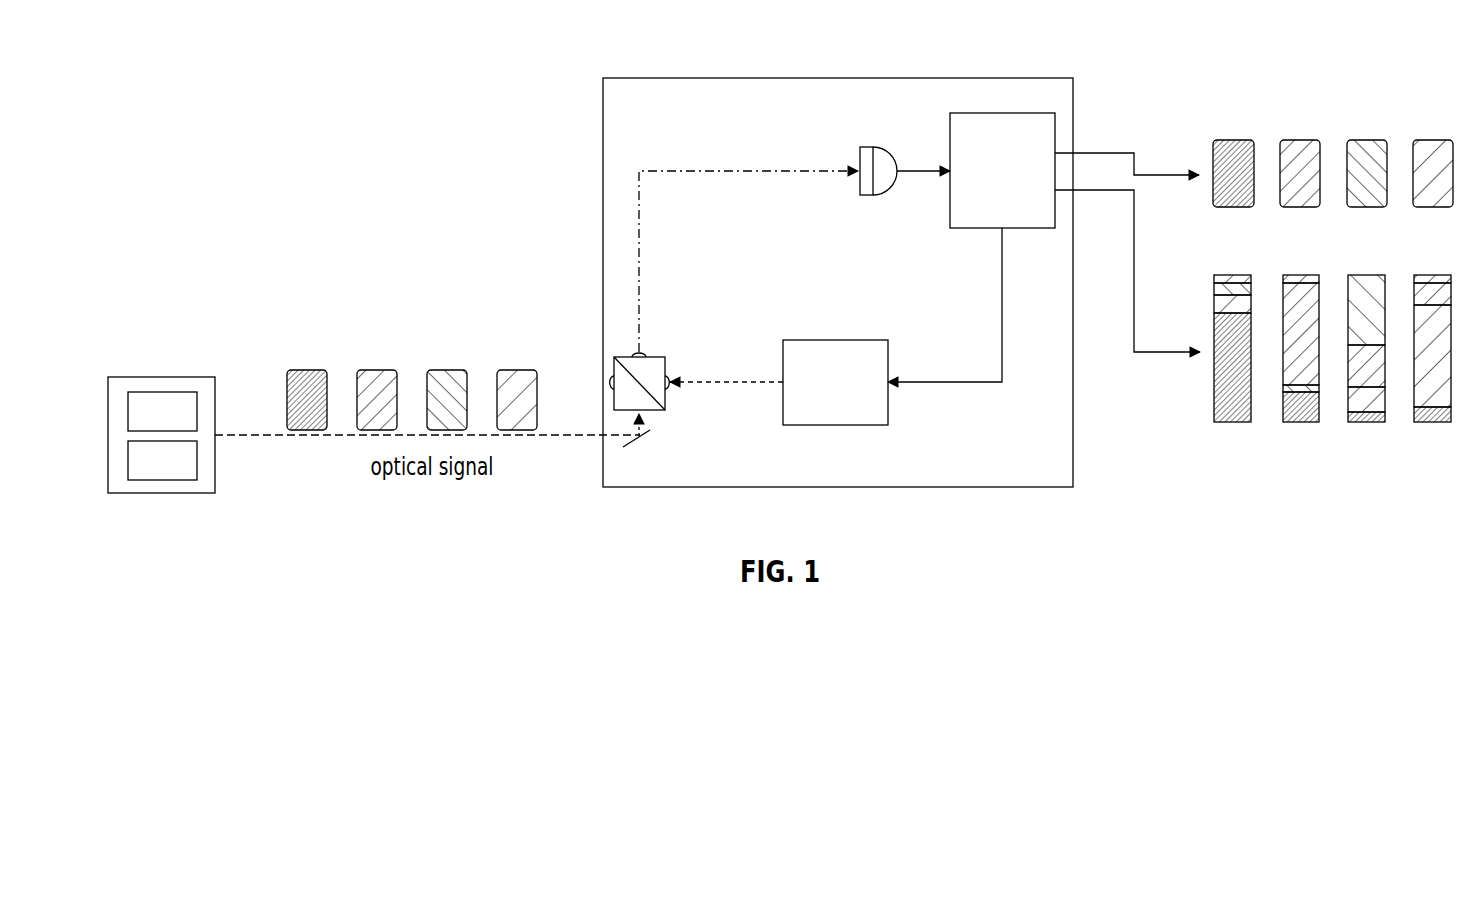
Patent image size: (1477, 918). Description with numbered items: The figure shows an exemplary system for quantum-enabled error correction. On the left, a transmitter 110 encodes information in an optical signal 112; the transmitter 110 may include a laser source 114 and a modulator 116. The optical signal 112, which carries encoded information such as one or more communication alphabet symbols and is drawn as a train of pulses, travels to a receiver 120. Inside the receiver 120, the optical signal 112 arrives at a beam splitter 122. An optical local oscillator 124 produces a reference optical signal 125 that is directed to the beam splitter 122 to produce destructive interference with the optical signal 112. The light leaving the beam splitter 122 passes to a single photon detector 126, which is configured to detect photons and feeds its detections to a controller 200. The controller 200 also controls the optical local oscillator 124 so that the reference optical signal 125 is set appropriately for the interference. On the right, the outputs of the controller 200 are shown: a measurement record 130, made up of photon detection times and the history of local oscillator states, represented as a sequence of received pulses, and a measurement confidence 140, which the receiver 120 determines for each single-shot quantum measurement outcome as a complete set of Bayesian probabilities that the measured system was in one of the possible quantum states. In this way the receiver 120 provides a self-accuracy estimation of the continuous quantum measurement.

The transmitter 110 is at (160, 377).
The optical signal 112 is at (537, 376).
The laser source 114 is at (141, 426).
The modulator 116 is at (141, 475).
The receiver 120 is at (838, 78).
The beam splitter 122 is at (656, 412).
The optical local oscillator 124 is at (790, 390).
The reference optical signal 125 is at (730, 382).
The single photon detector 126 is at (860, 153).
The measurement record 130 is at (1213, 143).
The measurement confidence 140 is at (1214, 395).
The controller 200 is at (1025, 184).